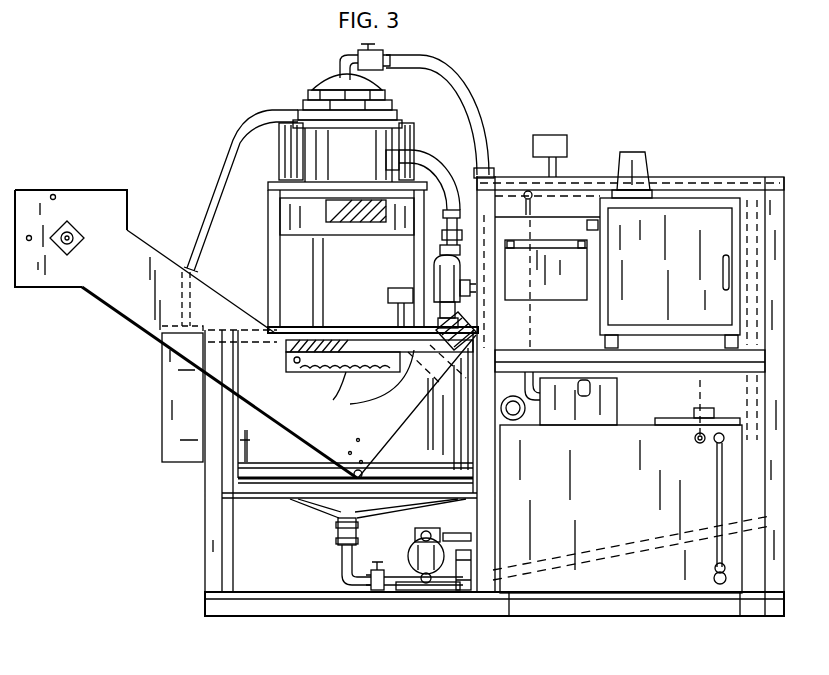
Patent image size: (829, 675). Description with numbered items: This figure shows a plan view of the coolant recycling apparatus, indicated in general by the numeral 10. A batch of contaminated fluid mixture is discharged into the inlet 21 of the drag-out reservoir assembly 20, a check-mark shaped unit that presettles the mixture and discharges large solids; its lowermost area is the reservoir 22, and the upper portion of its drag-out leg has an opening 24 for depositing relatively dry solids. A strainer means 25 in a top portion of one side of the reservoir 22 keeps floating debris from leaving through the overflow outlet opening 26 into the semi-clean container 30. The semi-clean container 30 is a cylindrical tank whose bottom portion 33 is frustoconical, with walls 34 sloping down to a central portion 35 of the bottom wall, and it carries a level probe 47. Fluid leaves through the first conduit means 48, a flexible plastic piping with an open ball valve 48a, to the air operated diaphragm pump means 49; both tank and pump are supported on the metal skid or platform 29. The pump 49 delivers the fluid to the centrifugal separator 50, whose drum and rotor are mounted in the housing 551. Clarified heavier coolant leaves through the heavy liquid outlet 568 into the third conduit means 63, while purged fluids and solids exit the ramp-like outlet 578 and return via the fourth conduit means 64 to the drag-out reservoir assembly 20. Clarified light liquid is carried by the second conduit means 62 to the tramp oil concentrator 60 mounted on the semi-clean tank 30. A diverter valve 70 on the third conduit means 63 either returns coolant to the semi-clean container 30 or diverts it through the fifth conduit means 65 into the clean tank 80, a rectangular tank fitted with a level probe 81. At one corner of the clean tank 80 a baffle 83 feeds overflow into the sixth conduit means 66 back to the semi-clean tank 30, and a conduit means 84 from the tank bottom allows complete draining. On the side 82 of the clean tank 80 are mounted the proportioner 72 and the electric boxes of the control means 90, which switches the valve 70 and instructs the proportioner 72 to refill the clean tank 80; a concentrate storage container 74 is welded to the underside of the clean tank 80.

The invention 10 is at (649, 93).
The drag-out reservoir assembly 20 is at (125, 320).
The inlet 21 is at (462, 357).
The reservoir 22 is at (330, 442).
The opening 24 is at (37, 287).
The strainer means 25 is at (358, 386).
The overflow outlet opening 26 is at (301, 372).
The metal skid or platform 29 is at (263, 617).
The semi-clean container 30 is at (246, 453).
The bottom portion 33 is at (299, 501).
The walls 34 is at (318, 512).
The central portion of bottom wall 35 is at (339, 530).
The level probe 47 is at (388, 294).
The first conduit means 48 is at (480, 97).
The open ball valve 48a is at (376, 591).
The pump means 49 is at (408, 556).
The centrifugal separator 50 is at (308, 85).
The housing 551 is at (313, 158).
The heavy liquid outlet 568 is at (366, 152).
The ramp-like outlet 578 is at (305, 213).
The tramp oil concentrator 60 is at (158, 414).
The second conduit means 62 is at (212, 195).
The third conduit means 63 is at (440, 166).
The fourth conduit means 64 is at (313, 270).
The fifth conduit means 65 is at (687, 186).
The sixth conduit means 66 is at (461, 200).
The diverter valve 70 is at (433, 278).
The proportioner 72 is at (614, 404).
The concentrate storage container 74 is at (636, 515).
The clean tank 80 is at (577, 208).
The level probe 81 is at (567, 136).
The side of clean tank 82 is at (681, 401).
The baffle 83 is at (546, 245).
The conduit means 84 is at (463, 592).
The control means 90 is at (565, 289).